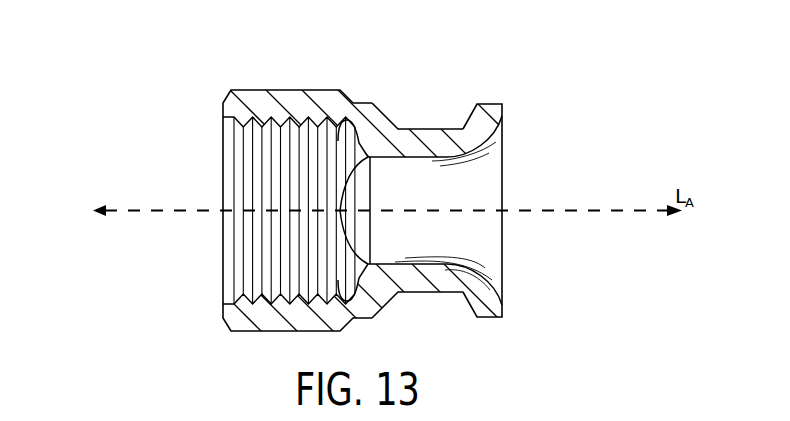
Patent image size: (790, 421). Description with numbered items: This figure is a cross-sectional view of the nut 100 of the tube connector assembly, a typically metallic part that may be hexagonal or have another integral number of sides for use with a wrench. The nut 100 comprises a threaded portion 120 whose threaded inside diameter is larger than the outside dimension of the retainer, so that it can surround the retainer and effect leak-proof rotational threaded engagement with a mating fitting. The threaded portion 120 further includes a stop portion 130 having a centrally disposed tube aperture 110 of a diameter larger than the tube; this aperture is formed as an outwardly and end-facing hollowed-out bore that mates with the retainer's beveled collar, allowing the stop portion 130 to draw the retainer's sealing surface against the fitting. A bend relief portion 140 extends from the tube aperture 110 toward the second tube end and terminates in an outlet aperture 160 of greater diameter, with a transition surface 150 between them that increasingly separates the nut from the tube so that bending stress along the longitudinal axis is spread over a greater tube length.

The nut 100 is at (134, 163).
The tube aperture 110 is at (336, 206).
The threaded portion 120 is at (258, 126).
The stop portion 130 is at (338, 140).
The bend relief portion 140 is at (426, 129).
The transition surface 150 is at (446, 158).
The outlet aperture 160 is at (503, 312).